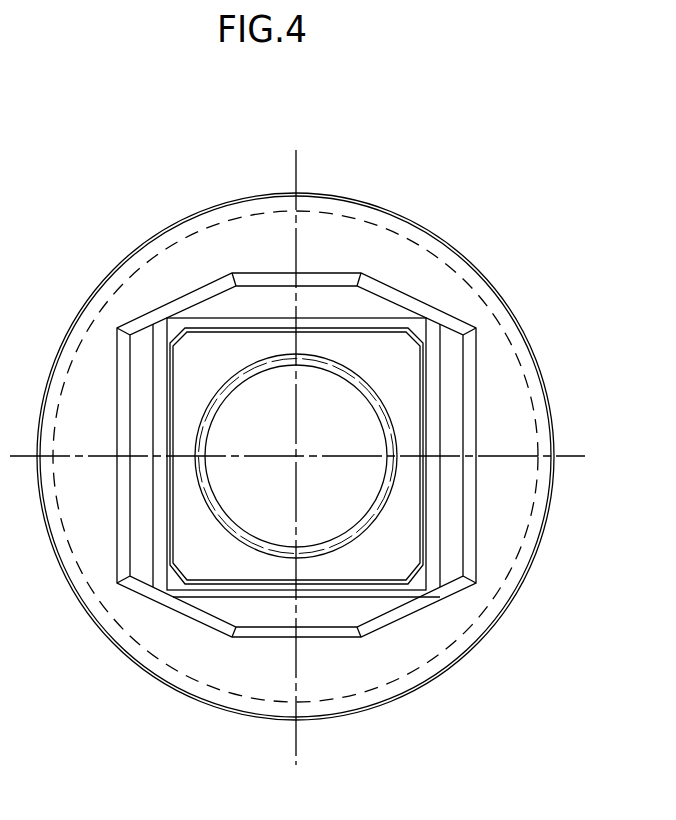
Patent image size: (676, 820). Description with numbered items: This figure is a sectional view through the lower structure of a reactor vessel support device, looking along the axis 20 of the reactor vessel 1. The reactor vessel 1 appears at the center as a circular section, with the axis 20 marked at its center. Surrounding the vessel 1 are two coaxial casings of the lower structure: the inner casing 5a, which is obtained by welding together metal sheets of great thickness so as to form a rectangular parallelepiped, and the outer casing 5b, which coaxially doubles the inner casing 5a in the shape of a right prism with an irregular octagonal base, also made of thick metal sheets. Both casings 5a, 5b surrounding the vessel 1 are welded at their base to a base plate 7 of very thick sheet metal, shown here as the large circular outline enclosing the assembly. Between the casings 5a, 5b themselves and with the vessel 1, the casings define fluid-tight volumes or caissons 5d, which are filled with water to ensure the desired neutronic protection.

The reactor vessel 1 is at (353, 420).
The axis of the vessel 20 is at (298, 459).
The base plate 7 is at (525, 482).
The inner casing 5a is at (225, 322).
The outer casing 5b is at (205, 290).
The fluid-tight volumes 5d is at (350, 307).